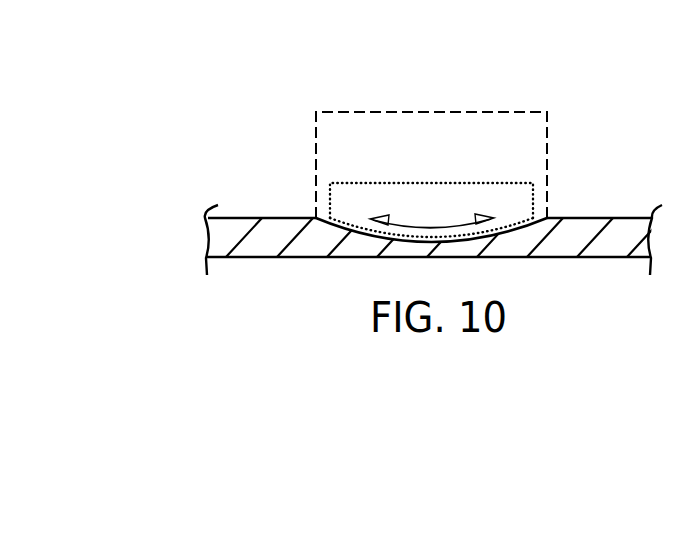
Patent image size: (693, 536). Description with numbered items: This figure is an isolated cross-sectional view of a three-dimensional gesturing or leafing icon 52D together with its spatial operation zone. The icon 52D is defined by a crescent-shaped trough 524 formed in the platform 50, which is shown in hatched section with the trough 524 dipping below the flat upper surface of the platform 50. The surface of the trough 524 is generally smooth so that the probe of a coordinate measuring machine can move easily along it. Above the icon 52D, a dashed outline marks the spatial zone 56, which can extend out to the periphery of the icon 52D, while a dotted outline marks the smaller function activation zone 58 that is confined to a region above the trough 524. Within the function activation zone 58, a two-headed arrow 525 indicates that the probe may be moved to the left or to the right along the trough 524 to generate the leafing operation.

The platform 50 is at (568, 240).
The gesturing or leafing icon 52D is at (306, 193).
The spatial zone 56 is at (548, 120).
The function activation zone 58 is at (512, 183).
The crescent-shaped trough 524 is at (510, 228).
The two-headed arrow 525 is at (430, 227).